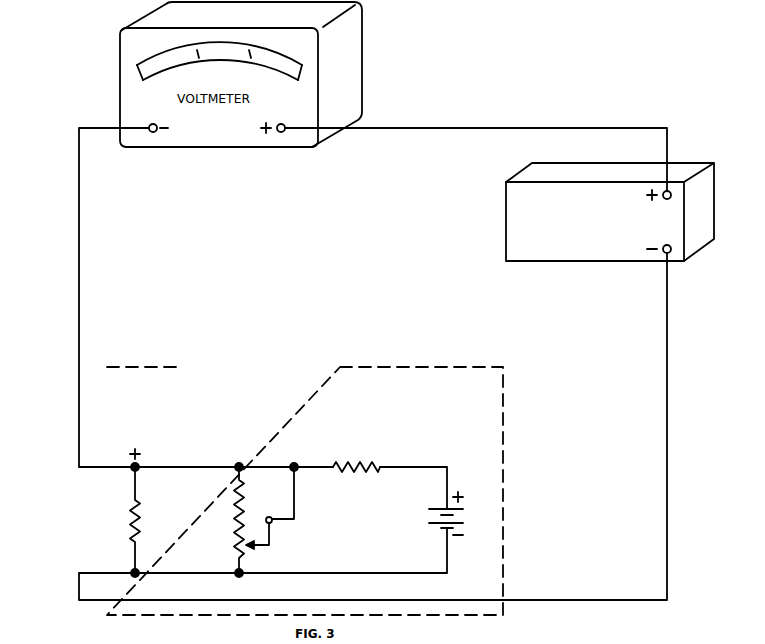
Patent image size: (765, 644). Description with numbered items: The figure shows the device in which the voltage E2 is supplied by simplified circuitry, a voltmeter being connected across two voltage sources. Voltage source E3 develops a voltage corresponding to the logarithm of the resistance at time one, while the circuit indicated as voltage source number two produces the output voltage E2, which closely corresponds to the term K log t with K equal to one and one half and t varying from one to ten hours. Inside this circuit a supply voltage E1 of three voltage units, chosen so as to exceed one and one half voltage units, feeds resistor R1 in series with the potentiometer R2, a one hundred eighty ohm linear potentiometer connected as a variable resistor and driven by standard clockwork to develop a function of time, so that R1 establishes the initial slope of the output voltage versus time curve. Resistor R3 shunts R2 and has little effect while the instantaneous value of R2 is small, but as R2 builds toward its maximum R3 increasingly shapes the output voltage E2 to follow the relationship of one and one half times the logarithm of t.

The resistor R1 is at (356, 460).
The linear potentiometer R2 is at (255, 520).
The shunt resistor R3 is at (146, 513).
The voltage source E1 is at (437, 513).
The output voltage E2 is at (262, 487).
The voltage source No. 1 E3 is at (610, 212).